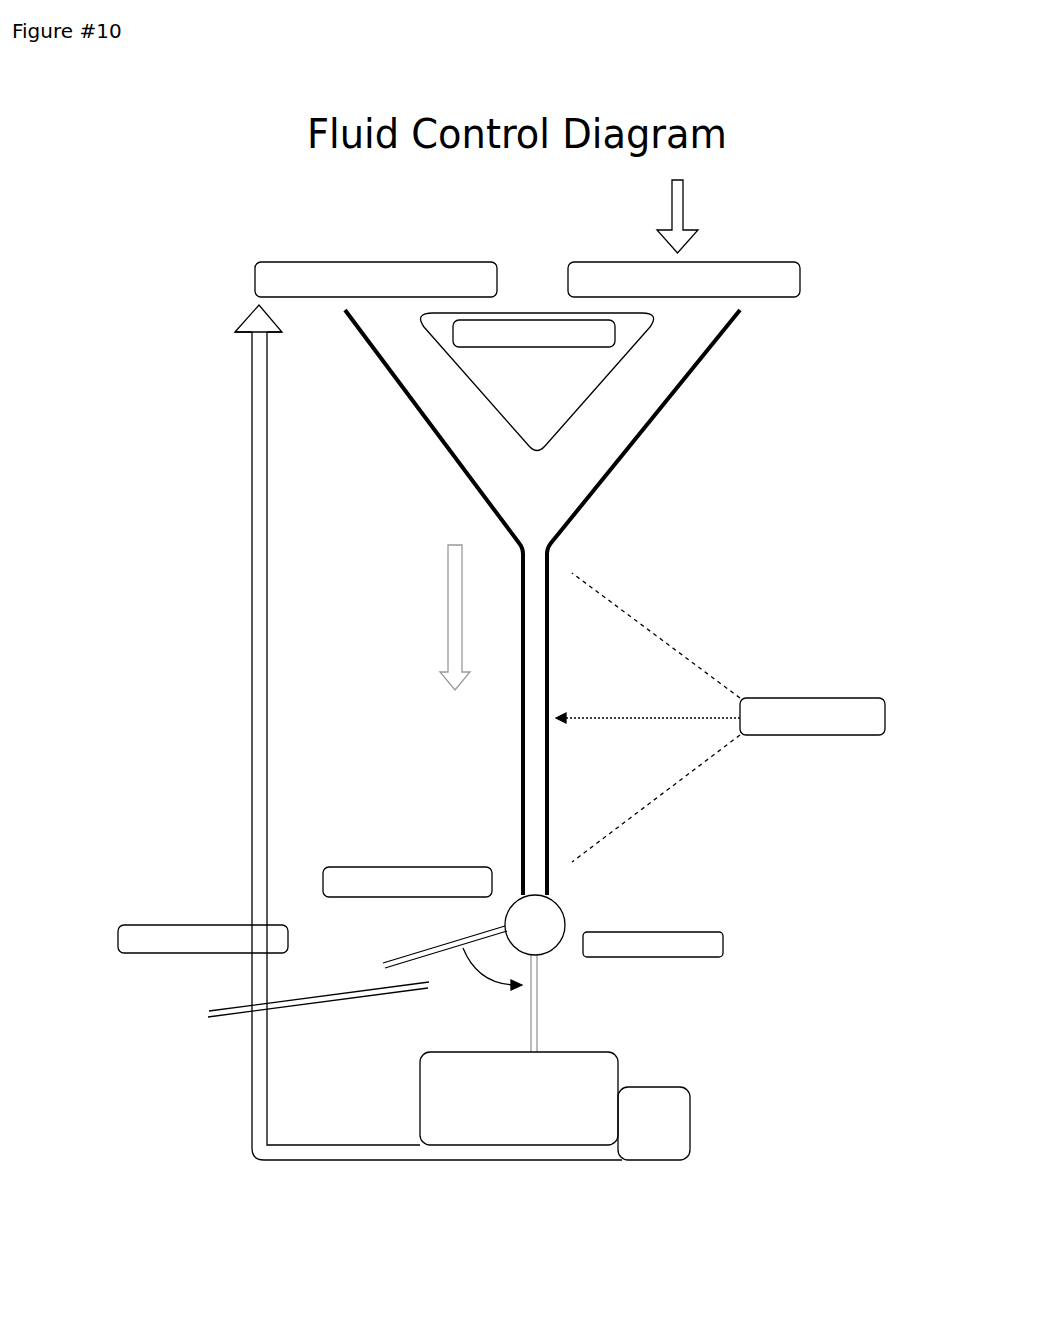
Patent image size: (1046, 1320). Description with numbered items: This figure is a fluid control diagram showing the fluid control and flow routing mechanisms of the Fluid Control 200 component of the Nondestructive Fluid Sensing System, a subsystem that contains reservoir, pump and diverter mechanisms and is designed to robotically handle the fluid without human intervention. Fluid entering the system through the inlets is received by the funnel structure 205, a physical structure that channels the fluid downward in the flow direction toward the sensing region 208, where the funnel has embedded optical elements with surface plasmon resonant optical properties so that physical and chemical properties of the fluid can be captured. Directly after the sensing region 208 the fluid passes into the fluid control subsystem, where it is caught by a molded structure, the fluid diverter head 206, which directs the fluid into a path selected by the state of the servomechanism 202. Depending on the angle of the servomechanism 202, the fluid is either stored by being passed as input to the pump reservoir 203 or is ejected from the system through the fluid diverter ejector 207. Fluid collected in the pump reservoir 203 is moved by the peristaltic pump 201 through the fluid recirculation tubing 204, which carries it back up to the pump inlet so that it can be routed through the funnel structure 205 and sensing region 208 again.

The Fluid Control 200 is at (535, 596).
The peristaltic pump 201 is at (654, 1126).
The servo mechanism 202 is at (669, 944).
The pump reservoir 203 is at (519, 1098).
The fluid recirculation tubing 204 is at (428, 735).
The funnel structure 205 is at (537, 382).
The fluid diverter head 206 is at (500, 915).
The fluid diverter ejector 207 is at (318, 998).
The sensing region 208 is at (732, 717).